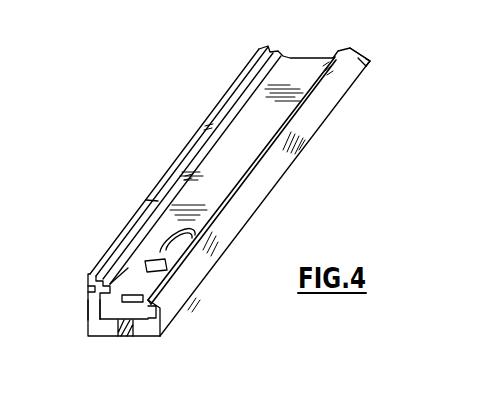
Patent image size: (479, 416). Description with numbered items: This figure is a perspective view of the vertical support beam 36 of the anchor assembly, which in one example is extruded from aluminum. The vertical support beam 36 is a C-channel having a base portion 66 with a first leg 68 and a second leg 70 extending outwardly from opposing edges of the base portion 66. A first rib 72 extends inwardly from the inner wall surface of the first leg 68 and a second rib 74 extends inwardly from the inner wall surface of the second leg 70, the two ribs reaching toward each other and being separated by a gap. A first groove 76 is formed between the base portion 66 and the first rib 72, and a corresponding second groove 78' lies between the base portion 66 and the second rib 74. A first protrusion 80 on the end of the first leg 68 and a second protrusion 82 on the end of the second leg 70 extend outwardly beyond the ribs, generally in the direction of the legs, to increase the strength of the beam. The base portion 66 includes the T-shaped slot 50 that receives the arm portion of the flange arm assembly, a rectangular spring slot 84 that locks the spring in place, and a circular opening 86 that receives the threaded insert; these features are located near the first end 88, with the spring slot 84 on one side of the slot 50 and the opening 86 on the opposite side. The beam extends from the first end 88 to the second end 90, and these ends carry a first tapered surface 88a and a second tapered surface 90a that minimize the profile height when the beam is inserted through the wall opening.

The vertical support beam 36 is at (270, 199).
The slot 50 is at (156, 200).
The base portion 66 is at (113, 308).
The first leg 68 is at (82, 307).
The second leg 70 is at (178, 316).
The first rib 72 is at (127, 268).
The second rib 74 is at (180, 293).
The first groove 76 is at (98, 315).
The slot 78' is at (157, 348).
The first protrusion 80 is at (97, 262).
The second protrusion 82 is at (198, 270).
The spring slot 84 is at (134, 294).
The opening 86 is at (212, 243).
The first end 88 is at (82, 330).
The first tapered surface 88a is at (92, 290).
The second end 90 is at (373, 66).
The second tapered surface 90a is at (358, 52).